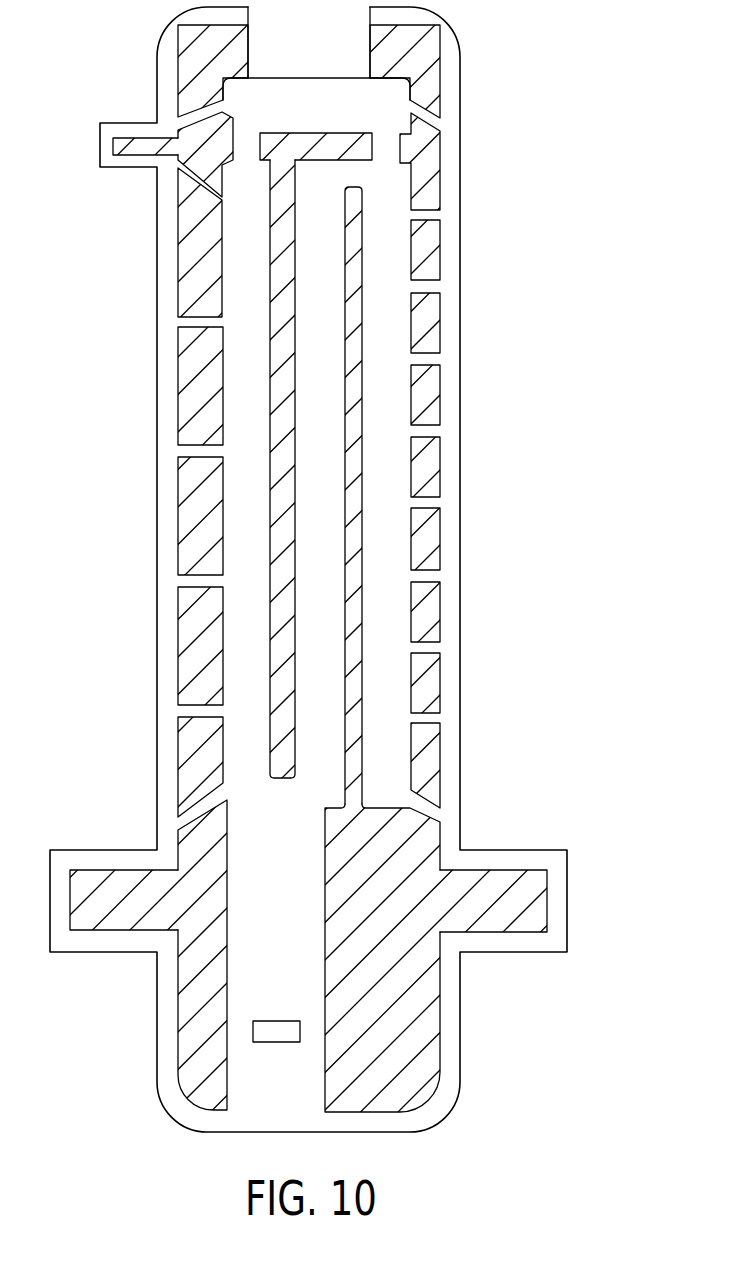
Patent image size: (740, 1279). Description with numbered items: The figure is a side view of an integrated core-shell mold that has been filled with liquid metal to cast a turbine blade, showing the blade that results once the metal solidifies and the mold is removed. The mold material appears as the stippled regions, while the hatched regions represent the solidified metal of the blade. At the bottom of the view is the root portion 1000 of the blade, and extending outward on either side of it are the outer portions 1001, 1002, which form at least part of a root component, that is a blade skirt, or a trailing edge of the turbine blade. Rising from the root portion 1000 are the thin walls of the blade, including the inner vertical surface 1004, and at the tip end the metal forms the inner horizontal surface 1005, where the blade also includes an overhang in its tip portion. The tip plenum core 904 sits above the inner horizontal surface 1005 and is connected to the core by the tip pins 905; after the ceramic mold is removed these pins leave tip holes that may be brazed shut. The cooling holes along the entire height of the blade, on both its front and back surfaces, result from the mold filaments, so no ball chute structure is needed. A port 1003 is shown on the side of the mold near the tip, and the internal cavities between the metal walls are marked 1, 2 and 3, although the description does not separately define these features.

The first chamber 1 is at (249, 450).
The second chamber 2 is at (319, 525).
The third chamber 3 is at (387, 450).
The tip plenum core 904 is at (297, 98).
The tip pins 905 is at (392, 145).
The root portion 1000 is at (387, 1022).
The outer portion 1001 is at (115, 905).
The outer portion 1002 is at (503, 905).
The inlet port 1003 is at (153, 147).
The inner vertical surface 1004 is at (352, 421).
The inner horizontal surface 1005 is at (330, 145).